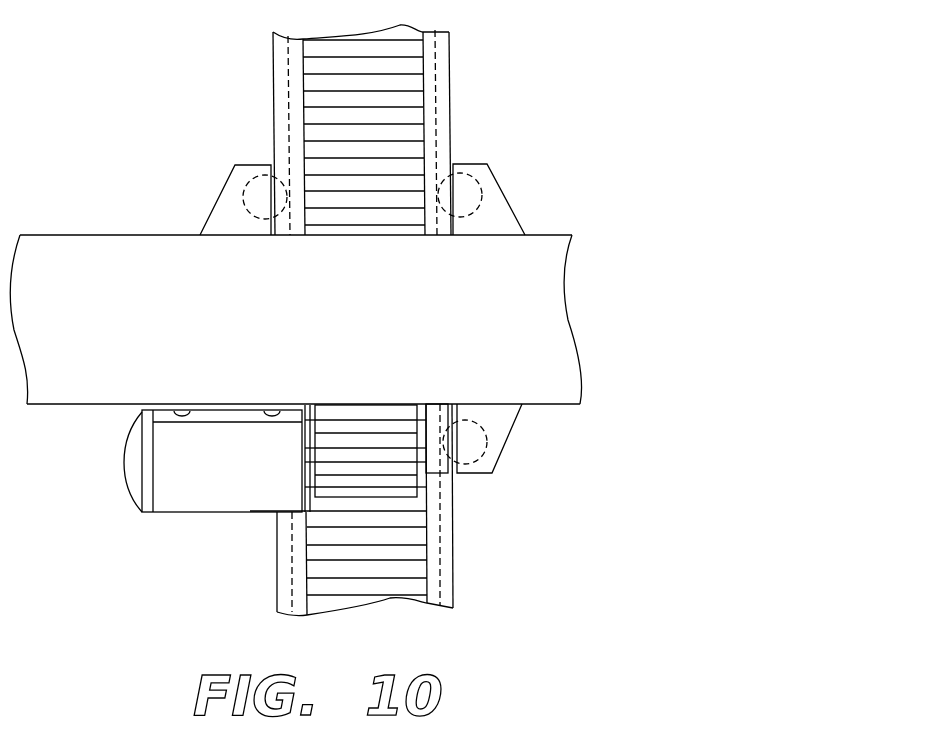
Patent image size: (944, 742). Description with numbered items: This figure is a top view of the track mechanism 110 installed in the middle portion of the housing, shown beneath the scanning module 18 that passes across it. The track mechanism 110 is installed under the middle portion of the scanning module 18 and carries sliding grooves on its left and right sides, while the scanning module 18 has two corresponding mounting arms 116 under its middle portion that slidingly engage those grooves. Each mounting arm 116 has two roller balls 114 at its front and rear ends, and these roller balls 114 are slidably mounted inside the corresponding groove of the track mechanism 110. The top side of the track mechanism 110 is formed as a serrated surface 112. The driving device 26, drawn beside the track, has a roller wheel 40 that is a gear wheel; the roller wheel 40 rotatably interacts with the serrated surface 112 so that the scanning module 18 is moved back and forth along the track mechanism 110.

The scanning module 18 is at (266, 340).
The driving device 26 is at (233, 522).
The roller wheel 40 is at (397, 495).
The track mechanism 110 is at (458, 65).
The serrated surface 112 is at (418, 570).
The roller balls 114 is at (257, 185).
The mounting arms 116 is at (225, 217).